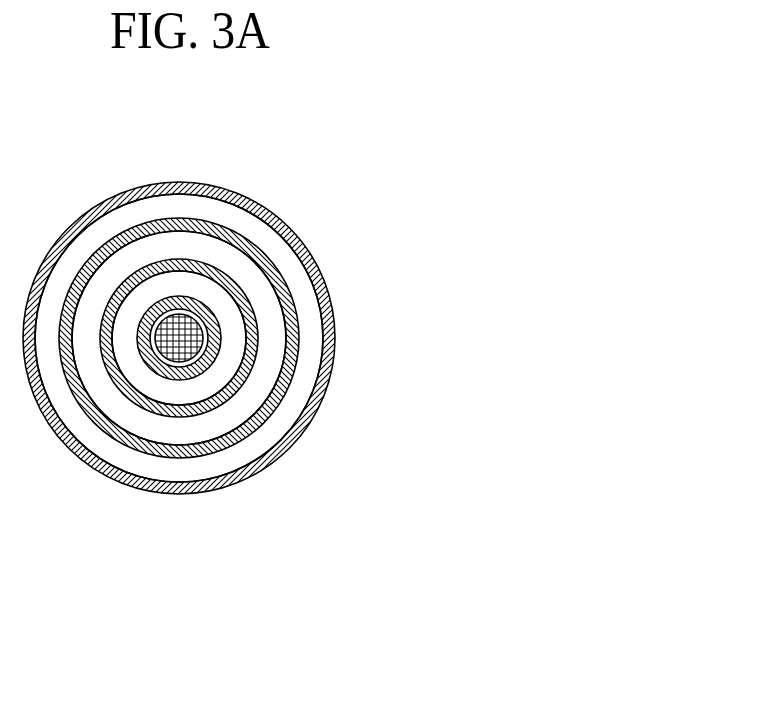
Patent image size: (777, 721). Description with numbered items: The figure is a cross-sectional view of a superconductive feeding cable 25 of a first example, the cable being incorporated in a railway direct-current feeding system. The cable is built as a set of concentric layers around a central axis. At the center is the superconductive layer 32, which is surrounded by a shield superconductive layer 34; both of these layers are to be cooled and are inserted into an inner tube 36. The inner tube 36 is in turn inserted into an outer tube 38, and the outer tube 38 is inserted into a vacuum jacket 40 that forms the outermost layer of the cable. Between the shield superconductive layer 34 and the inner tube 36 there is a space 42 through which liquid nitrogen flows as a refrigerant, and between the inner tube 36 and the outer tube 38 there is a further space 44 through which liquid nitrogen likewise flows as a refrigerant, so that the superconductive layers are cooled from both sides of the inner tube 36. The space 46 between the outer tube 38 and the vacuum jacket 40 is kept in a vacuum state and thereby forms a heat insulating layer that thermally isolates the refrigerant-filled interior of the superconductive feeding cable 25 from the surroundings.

The superconductive feeding cable 25 is at (290, 178).
The superconductive layer 32 is at (175, 368).
The shield superconductive layer 34 is at (193, 375).
The inner tube 36 is at (218, 403).
The outer tube 38 is at (260, 417).
The vacuum jacket 40 is at (307, 420).
The space 42 is at (223, 310).
The space 44 is at (265, 312).
The space 46 is at (308, 361).